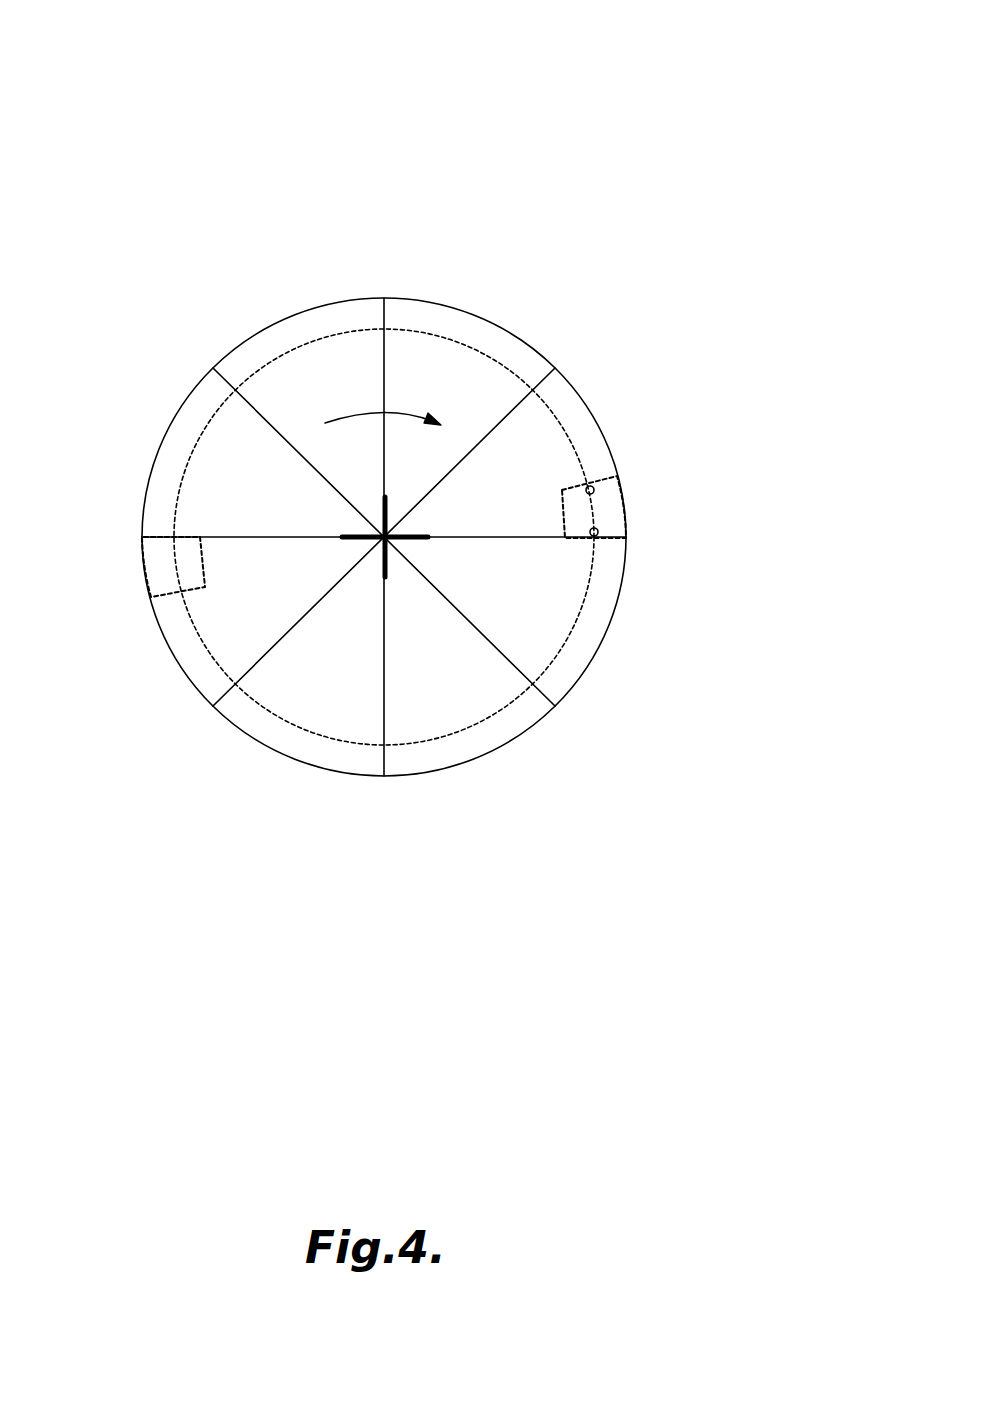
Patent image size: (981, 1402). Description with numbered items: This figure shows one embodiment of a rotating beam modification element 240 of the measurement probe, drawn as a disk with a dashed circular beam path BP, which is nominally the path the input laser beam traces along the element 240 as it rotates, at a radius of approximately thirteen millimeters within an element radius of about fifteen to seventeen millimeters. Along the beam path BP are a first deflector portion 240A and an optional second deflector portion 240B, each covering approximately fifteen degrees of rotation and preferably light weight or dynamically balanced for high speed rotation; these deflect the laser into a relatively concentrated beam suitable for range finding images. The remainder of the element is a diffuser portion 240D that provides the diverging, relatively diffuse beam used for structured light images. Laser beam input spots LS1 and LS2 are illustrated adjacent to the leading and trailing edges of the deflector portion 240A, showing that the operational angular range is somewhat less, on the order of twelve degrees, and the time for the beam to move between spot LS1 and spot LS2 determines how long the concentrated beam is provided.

The rotating beam modification element 240 is at (604, 130).
The first deflector portion 240A is at (626, 512).
The second deflector portion 240B is at (143, 573).
The diffuser portion 240D is at (347, 363).
The beam path BP is at (207, 424).
The laser beam input spot LS1 is at (598, 534).
The laser beam input spot LS2 is at (591, 486).